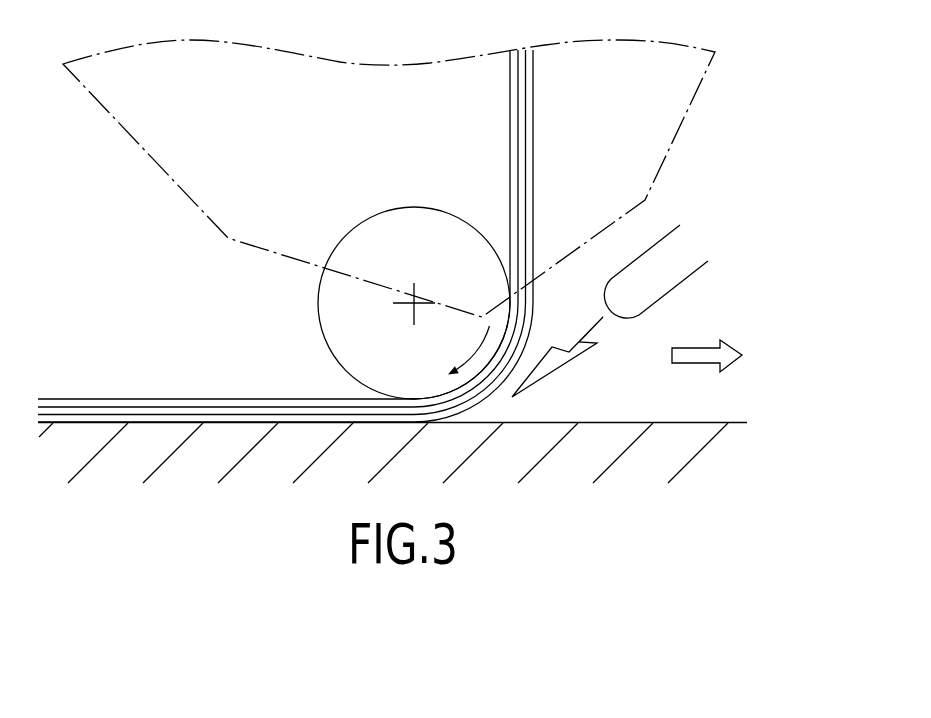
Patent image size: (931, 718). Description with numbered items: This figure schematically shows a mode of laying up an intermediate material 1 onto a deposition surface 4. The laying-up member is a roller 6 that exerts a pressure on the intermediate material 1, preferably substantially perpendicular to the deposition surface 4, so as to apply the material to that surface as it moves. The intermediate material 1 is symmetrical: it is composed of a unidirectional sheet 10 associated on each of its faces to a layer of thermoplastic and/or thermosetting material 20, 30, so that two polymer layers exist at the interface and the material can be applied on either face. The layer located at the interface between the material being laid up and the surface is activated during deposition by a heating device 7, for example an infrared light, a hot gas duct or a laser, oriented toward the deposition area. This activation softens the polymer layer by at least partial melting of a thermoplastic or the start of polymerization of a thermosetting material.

The intermediate material 1 is at (317, 211).
The unidirectional sheet 10 is at (519, 50).
The layer of thermoplastic and/or thermosetting material 20 is at (530, 50).
The layer of thermoplastic and/or thermosetting material 30 is at (511, 50).
The deposition surface 4 is at (623, 415).
The roller 6 is at (380, 358).
The heating device 7 is at (655, 287).